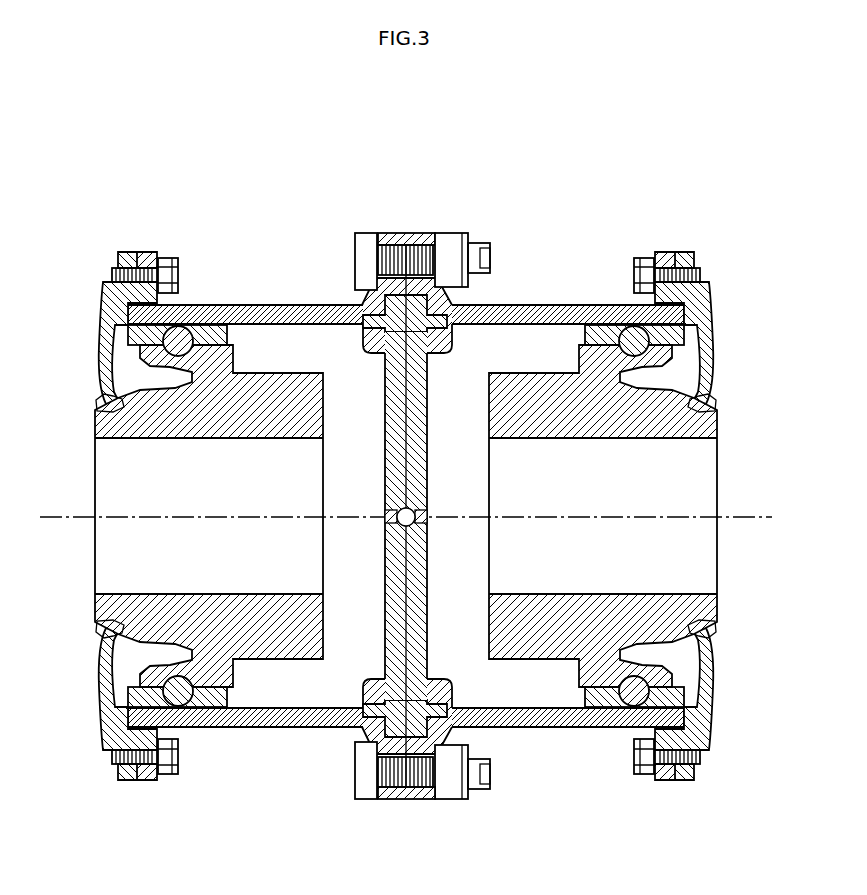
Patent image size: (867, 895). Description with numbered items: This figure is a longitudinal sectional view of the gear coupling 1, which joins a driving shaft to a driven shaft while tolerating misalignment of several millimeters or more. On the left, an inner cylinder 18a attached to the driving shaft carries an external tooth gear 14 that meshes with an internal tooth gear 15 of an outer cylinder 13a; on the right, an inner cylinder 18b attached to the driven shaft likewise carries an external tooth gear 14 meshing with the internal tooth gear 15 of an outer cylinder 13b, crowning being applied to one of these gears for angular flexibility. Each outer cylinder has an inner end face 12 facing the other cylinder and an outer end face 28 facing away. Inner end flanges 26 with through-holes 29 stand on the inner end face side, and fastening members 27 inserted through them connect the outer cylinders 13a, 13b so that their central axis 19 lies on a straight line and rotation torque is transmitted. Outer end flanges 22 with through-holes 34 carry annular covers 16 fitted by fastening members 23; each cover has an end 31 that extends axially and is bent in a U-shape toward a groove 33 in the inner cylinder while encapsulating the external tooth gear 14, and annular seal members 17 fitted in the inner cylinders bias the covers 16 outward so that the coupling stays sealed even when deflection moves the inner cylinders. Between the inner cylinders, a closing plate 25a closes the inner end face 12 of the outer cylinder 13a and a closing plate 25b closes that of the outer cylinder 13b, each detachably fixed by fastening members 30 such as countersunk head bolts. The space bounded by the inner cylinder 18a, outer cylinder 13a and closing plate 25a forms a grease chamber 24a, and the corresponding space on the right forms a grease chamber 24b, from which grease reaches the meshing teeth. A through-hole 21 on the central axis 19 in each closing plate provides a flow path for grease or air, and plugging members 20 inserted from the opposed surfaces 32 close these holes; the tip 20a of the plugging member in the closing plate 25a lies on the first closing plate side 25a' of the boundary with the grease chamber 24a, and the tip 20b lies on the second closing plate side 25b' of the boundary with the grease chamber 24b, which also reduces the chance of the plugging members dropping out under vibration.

The gear coupling 1 is at (418, 150).
The inner end face 12 is at (372, 362).
The outer cylinder 13a is at (228, 312).
The outer cylinder 13b is at (583, 312).
The external tooth gear 14 is at (183, 337).
The internal tooth gear 15 is at (105, 337).
The cover 16 is at (110, 289).
The seal member 17 is at (102, 382).
The inner cylinder 18a is at (102, 427).
The inner cylinder 18b is at (710, 427).
The central axis 19 is at (690, 514).
The plugging member 20 is at (384, 498).
The tip 20a is at (387, 518).
The tip 20b is at (423, 512).
The through-hole 21 is at (384, 527).
The outer end flange 22 is at (150, 781).
The fastening member 23 is at (173, 776).
The grease chamber 24a is at (342, 385).
The grease chamber 24b is at (466, 384).
The closing plate 25a is at (367, 608).
The first closing plate side 25a' is at (367, 472).
The closing plate 25b is at (446, 608).
The second closing plate side 25b' is at (449, 466).
The inner end flange 26 is at (397, 800).
The fastening member 27 is at (366, 800).
The outer end face 28 is at (135, 717).
The through-hole 29 is at (406, 800).
The fastening member 30 is at (405, 298).
The end 31 is at (108, 650).
The surface 32 is at (362, 684).
The groove 33 is at (105, 622).
The through-hole 34 is at (150, 758).